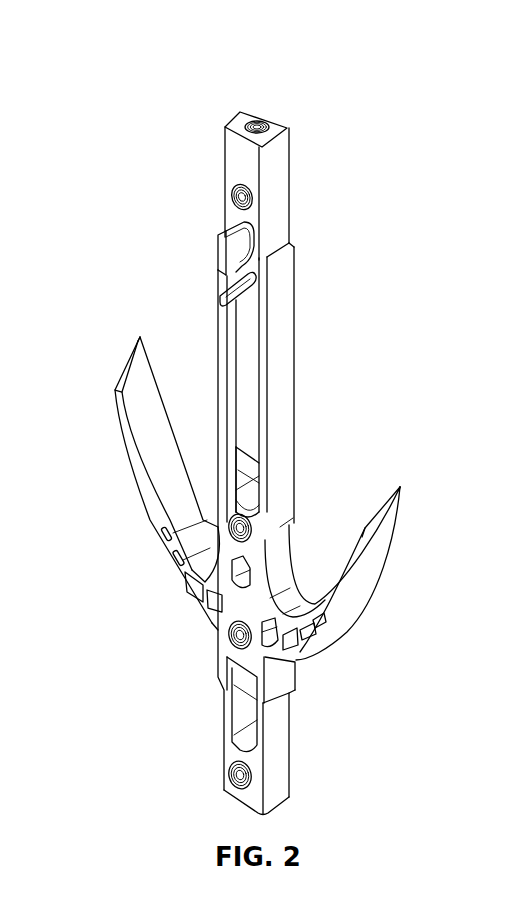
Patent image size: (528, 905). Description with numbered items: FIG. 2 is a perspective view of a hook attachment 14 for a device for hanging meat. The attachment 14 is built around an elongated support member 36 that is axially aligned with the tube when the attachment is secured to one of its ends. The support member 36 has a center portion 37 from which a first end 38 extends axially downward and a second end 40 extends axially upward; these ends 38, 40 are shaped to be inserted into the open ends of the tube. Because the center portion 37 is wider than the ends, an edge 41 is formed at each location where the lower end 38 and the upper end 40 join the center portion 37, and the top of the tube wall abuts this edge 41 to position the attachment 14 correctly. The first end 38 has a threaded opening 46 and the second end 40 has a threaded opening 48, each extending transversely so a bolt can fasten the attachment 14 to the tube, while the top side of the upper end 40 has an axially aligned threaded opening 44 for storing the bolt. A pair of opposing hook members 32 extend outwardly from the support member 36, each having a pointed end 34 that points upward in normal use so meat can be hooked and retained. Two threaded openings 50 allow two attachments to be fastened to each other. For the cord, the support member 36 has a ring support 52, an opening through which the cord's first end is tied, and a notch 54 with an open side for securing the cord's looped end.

The attachment 14 is at (422, 94).
The hook member 32 is at (172, 470).
The pointed end 34 is at (140, 331).
The elongated support member 36 is at (298, 284).
The center portion 37 is at (284, 357).
The first end 38 is at (297, 796).
The second end 40 is at (291, 169).
The edge 41 is at (298, 245).
The threaded opening 44 is at (258, 114).
The opening 46 is at (228, 774).
The opening 48 is at (231, 192).
The threaded openings 50 is at (227, 528).
The ring support 52 is at (232, 236).
The notch 54 is at (227, 281).